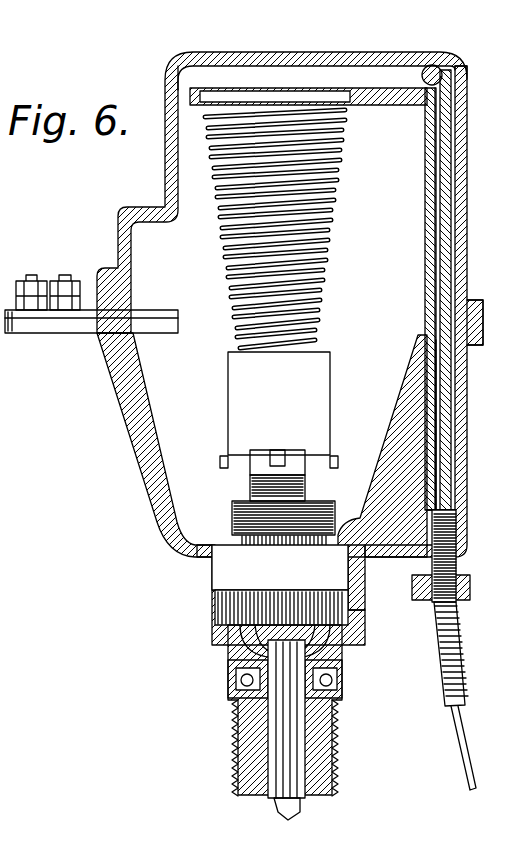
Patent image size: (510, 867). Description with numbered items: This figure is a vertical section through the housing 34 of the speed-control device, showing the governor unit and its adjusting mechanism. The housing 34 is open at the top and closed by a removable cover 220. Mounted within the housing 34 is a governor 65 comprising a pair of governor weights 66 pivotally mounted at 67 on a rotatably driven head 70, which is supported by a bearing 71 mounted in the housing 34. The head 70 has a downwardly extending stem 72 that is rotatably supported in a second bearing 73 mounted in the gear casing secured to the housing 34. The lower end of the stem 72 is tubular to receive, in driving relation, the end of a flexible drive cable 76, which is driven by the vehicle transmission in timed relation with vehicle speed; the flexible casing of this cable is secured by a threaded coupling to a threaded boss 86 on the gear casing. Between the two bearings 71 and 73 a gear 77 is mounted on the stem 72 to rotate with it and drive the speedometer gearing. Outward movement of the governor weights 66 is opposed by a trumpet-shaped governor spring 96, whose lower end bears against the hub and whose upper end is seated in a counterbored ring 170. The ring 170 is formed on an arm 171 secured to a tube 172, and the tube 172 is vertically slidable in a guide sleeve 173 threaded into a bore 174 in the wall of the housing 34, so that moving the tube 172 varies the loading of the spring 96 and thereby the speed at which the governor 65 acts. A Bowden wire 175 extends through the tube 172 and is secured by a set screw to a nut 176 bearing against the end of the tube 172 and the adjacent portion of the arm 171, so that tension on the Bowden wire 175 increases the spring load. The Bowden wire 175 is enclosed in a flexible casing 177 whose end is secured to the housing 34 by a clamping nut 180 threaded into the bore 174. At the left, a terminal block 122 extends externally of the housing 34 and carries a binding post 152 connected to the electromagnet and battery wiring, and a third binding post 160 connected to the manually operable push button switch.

The housing 34 is at (165, 470).
The removable cover 220 is at (168, 150).
The counterbored ring 170 is at (178, 97).
The arm 171 is at (393, 108).
The nut 176 is at (455, 90).
The tube 172 is at (448, 170).
The guide sleeve 173 is at (470, 240).
The Bowden wire 175 is at (435, 423).
The governor spring 96 is at (315, 232).
The governor weights 66 is at (312, 388).
The pivot 67 is at (338, 465).
The governor 65 is at (204, 384).
The head 70 is at (240, 518).
The bearing 71 is at (225, 590).
The gear 77 is at (222, 618).
The bearing 73 is at (235, 683).
The stem 72 is at (275, 720).
The threaded boss 86 is at (250, 768).
The flexible drive cable 76 is at (278, 815).
The bore 174 is at (392, 560).
The clamping nut 180 is at (412, 590).
The flexible casing 177 is at (440, 640).
The terminal block 122 is at (60, 333).
The binding post 152 is at (32, 275).
The binding post 160 is at (60, 275).